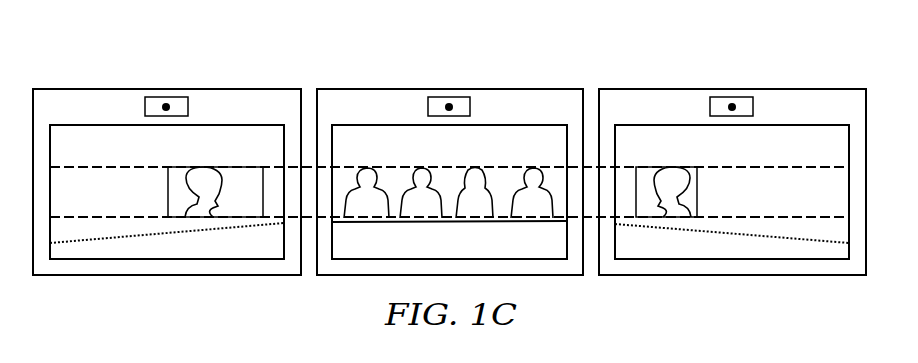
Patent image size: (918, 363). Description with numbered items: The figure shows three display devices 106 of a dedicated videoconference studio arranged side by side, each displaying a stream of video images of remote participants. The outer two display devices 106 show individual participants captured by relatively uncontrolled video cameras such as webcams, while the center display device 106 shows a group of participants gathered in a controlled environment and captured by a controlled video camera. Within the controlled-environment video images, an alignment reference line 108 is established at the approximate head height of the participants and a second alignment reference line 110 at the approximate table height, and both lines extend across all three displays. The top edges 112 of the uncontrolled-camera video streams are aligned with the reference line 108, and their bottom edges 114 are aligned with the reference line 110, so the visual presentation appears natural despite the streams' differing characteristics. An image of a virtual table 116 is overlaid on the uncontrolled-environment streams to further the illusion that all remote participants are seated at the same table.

The display devices 106 is at (449, 154).
The alignment reference line 108 is at (508, 167).
The alignment reference line 110 is at (747, 215).
The top edges 112 is at (227, 167).
The bottom edges 114 is at (210, 218).
The virtual table 116 is at (138, 243).